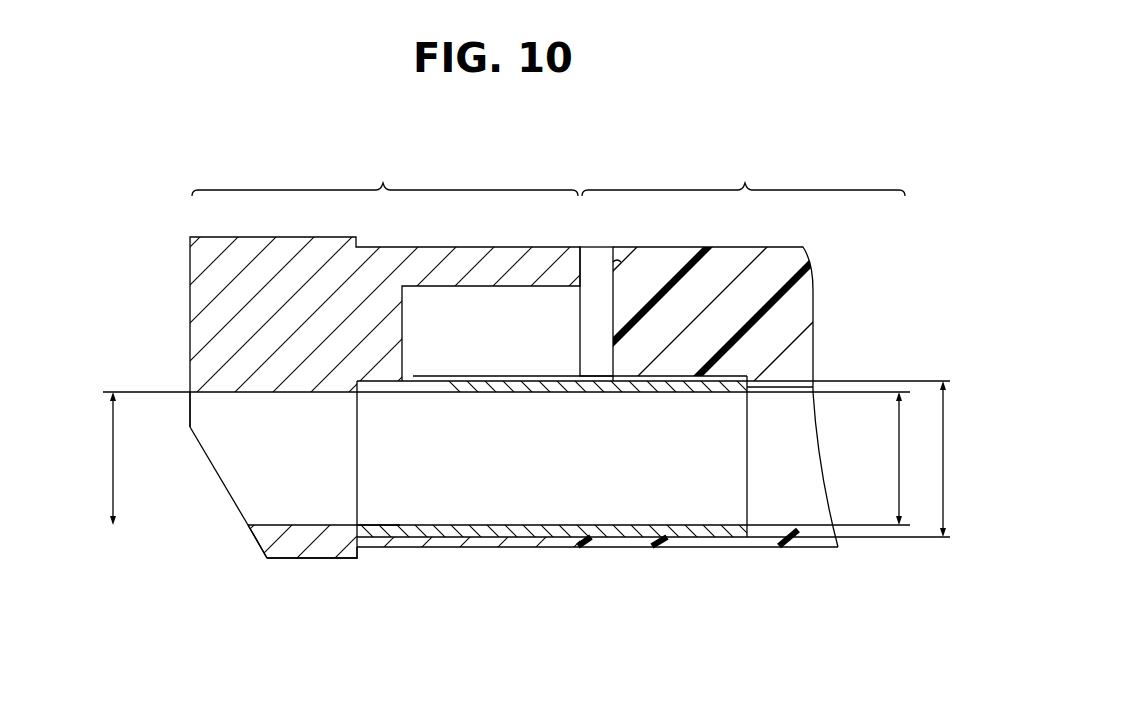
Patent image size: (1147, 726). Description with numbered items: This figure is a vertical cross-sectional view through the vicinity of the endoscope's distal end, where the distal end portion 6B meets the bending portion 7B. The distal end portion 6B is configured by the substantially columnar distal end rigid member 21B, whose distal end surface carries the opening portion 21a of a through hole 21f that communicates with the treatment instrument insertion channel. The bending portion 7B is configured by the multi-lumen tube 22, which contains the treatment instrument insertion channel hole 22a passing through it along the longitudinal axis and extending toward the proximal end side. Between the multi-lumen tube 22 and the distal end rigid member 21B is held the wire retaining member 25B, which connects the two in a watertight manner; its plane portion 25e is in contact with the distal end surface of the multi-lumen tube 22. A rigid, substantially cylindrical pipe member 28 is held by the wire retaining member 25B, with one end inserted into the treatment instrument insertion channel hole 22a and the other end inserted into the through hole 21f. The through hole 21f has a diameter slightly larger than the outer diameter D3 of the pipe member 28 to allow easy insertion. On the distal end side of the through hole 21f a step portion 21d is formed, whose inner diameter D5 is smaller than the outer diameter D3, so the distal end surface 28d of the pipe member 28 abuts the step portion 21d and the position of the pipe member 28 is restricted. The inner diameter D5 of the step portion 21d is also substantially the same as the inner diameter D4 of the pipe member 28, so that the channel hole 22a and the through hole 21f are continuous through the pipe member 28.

The distal end portion 6B is at (385, 173).
The bending portion 7B is at (743, 173).
The distal end rigid member 21B is at (405, 265).
The opening portion 21a is at (202, 459).
The through hole 21f is at (258, 497).
The step portion 21d is at (352, 526).
The multi-lumen tube 22 is at (742, 270).
The treatment instrument insertion channel hole 22a is at (802, 466).
The wire retaining member 25B is at (597, 277).
The plane portion 25e is at (618, 263).
The pipe member 28 is at (687, 532).
The distal end surface 28d is at (358, 530).
The outer diameter D3 is at (961, 459).
The inner diameter D4 is at (916, 458).
The inner diameter D5 is at (96, 458).